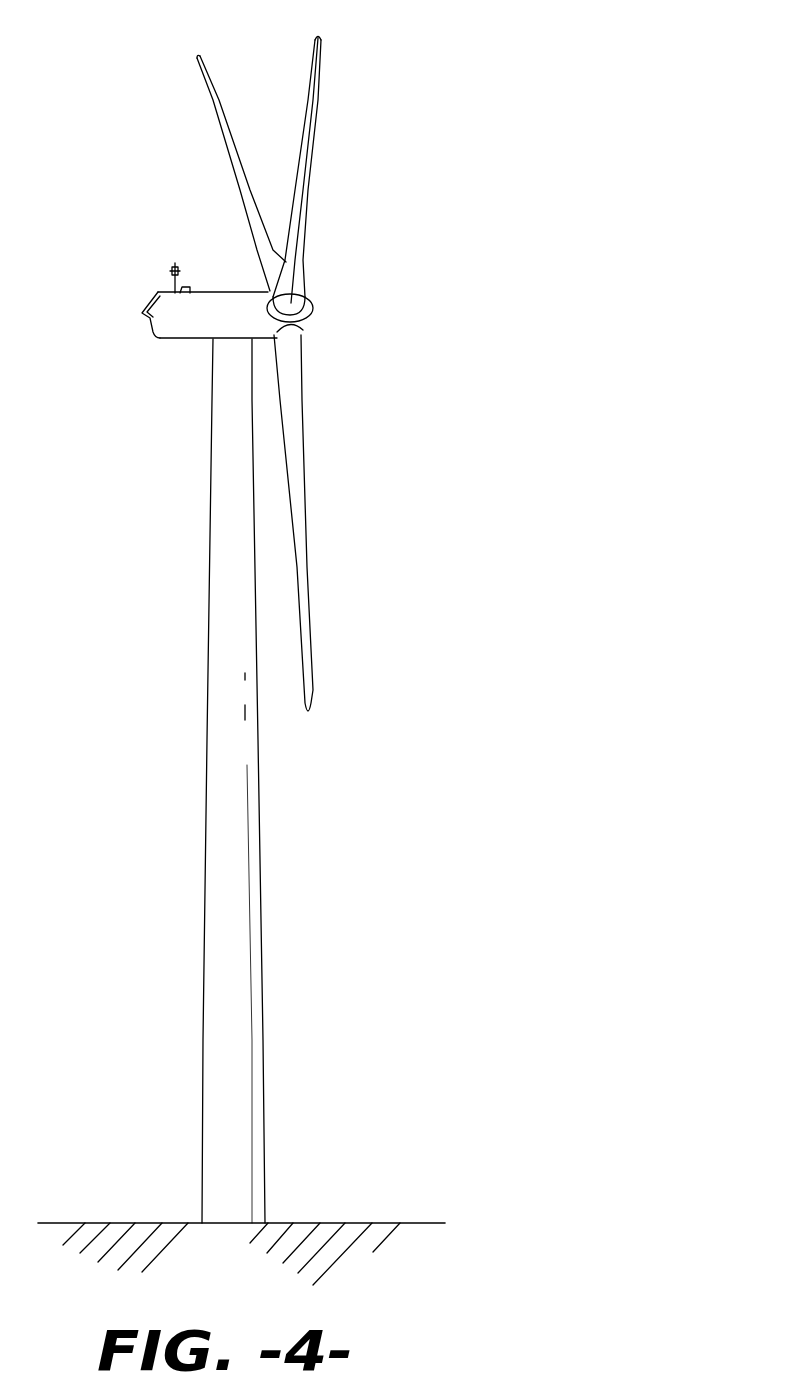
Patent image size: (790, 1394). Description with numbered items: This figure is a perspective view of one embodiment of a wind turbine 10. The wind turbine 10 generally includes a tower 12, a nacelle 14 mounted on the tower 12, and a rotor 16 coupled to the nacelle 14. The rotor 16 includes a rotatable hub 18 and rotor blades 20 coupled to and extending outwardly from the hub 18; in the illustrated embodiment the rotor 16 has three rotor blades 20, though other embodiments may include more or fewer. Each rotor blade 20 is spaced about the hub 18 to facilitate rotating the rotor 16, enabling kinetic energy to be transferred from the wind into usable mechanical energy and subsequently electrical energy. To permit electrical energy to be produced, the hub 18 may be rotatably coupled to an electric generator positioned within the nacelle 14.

The wind turbine 10 is at (422, 118).
The tower 12 is at (220, 902).
The nacelle 14 is at (187, 340).
The rotor 16 is at (320, 289).
The rotatable hub 18 is at (310, 320).
The rotor blade 20 is at (312, 80).